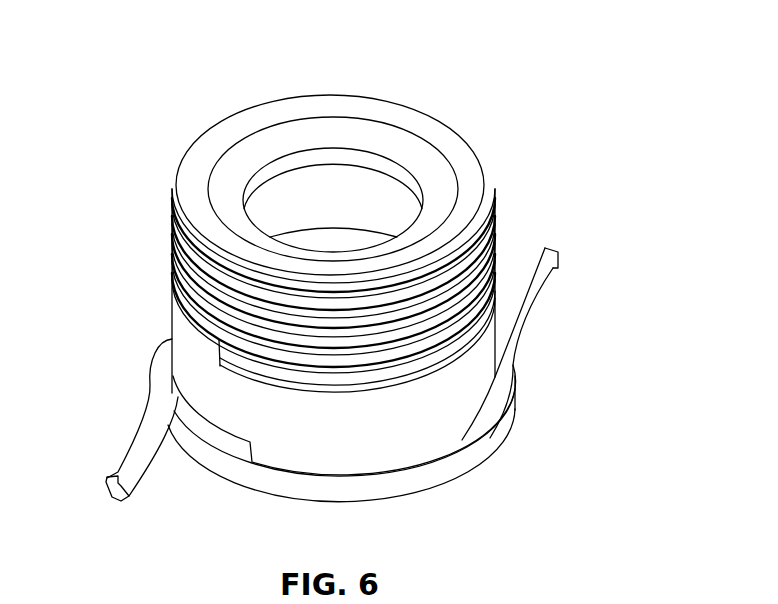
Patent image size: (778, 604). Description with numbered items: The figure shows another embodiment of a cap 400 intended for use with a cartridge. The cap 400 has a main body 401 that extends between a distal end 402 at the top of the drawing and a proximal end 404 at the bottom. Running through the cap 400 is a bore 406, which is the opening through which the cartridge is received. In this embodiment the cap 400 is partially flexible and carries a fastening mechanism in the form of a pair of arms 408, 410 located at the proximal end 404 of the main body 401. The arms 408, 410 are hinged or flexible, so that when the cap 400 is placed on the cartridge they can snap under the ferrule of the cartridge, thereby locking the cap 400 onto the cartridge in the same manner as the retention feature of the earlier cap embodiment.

The cap 400 is at (550, 51).
The distal end 402 is at (167, 82).
The bore 406 is at (307, 160).
The main body 401 is at (495, 273).
The proximal end 404 is at (500, 473).
The arm 408 is at (142, 445).
The arm 410 is at (522, 290).